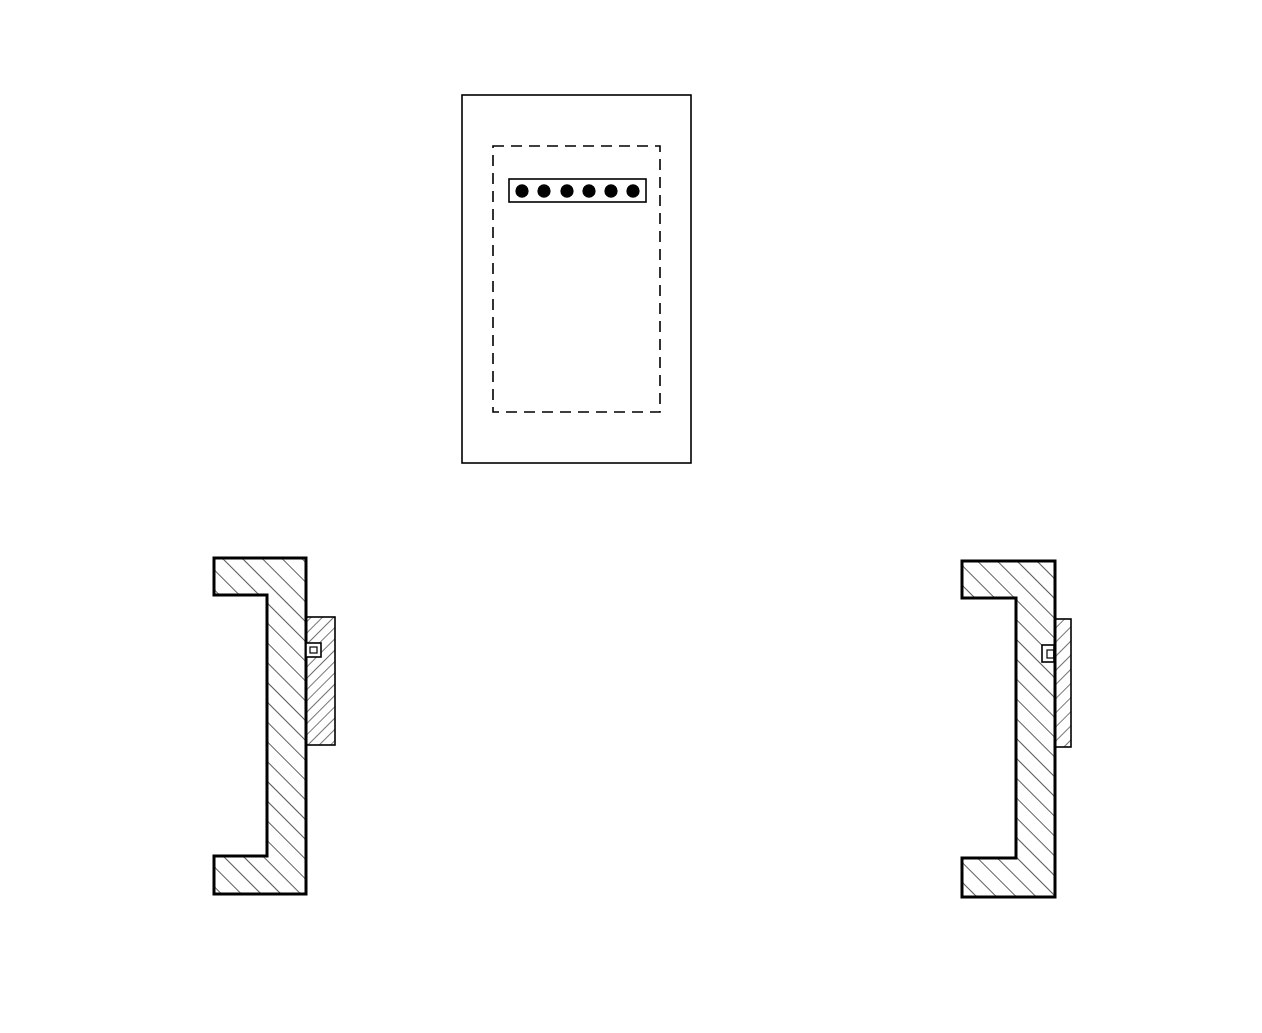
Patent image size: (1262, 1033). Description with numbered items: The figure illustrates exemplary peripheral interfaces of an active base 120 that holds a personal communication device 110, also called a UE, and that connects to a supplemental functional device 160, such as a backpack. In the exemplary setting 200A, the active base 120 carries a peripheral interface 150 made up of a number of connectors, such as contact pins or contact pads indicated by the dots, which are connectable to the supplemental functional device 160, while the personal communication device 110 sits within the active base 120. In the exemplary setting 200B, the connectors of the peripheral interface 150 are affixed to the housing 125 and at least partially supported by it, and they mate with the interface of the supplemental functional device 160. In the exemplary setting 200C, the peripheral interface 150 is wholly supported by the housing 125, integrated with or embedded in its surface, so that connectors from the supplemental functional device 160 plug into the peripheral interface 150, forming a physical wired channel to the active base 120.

In FIG. 2A, the exemplary setting 200A is at (466, 72).
In FIG. 2B, the exemplary setting 200B is at (158, 510).
In FIG. 2C, the exemplary setting 200C is at (968, 455).
In FIG. 2A, the active base 120 is at (608, 54).
In FIG. 2A, the personal communication device 110 is at (558, 303).
In FIG. 2A, the peripheral interface 150 is at (646, 187).
In FIG. 2B, the peripheral interface 150 is at (308, 650).
In FIG. 2C, the peripheral interface 150 is at (1042, 655).
In FIG. 2B, the housing 125 is at (298, 517).
In FIG. 2C, the housing 125 is at (1047, 520).
In FIG. 2B, the supplemental functional device 160 is at (317, 617).
In FIG. 2C, the supplemental functional device 160 is at (1063, 618).